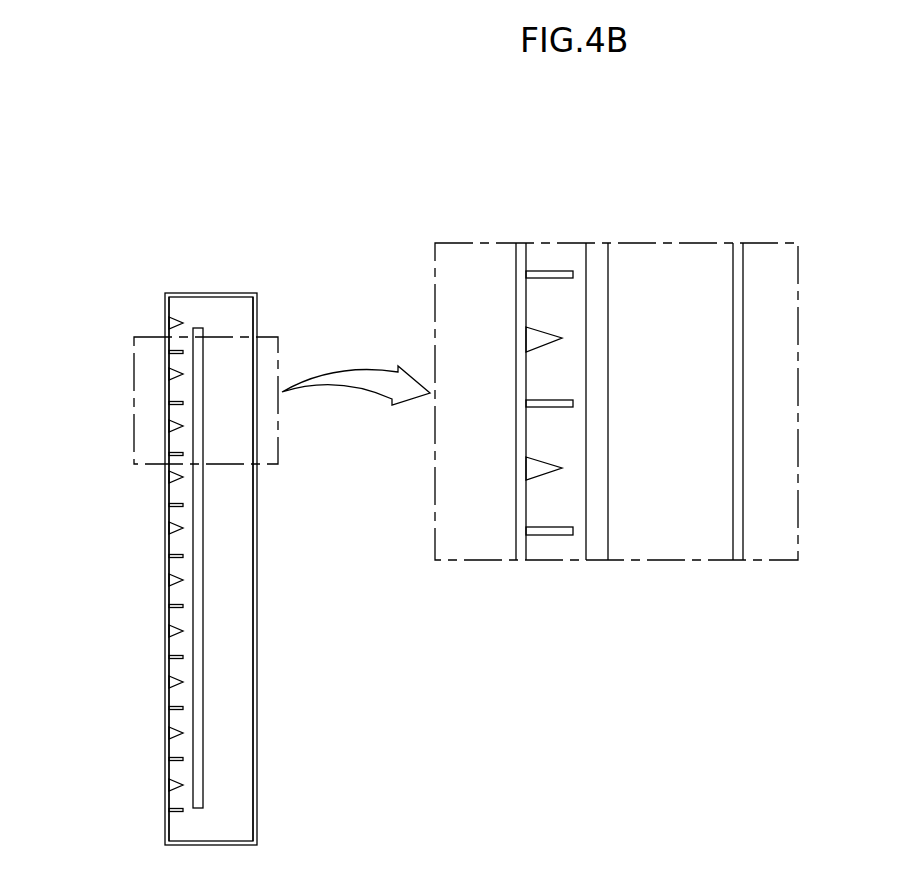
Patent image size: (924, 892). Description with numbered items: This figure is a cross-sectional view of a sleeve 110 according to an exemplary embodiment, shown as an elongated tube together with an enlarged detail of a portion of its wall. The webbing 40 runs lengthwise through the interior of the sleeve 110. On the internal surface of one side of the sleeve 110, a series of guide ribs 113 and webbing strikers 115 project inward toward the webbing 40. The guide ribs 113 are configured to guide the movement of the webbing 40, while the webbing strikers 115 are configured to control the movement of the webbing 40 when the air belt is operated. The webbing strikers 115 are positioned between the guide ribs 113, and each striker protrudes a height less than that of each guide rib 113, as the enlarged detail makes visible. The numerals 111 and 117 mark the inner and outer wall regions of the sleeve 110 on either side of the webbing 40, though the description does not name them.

The sleeve 110 is at (209, 283).
The inner wall 111 is at (168, 665).
The guide ribs 113 is at (178, 552).
The webbing strikers 115 is at (177, 580).
The outer wall 117 is at (257, 662).
The webbing 40 is at (198, 767).